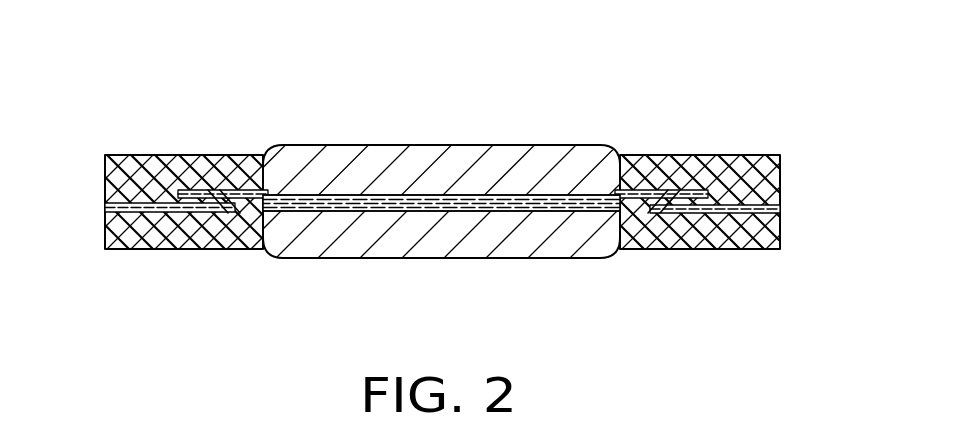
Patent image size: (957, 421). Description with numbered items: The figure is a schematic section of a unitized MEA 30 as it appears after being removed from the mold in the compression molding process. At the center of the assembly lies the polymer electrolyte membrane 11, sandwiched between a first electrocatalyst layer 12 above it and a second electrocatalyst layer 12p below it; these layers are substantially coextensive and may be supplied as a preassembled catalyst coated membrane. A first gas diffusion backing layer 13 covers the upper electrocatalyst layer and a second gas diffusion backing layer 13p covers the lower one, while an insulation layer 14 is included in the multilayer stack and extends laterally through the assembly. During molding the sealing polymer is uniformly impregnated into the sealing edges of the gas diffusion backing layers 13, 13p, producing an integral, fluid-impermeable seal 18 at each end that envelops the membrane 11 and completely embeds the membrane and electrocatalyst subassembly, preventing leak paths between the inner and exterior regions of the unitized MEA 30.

The unitized MEA 30 is at (303, 54).
The seal 18 is at (105, 181).
The first gas diffusion backing layer 13 is at (358, 145).
The second gas diffusion backing layer 13p is at (357, 258).
The insulation layer 14 is at (780, 207).
The first electrocatalyst layer 12 is at (445, 195).
The polymer electrolyte membrane 11 is at (522, 201).
The second electrocatalyst layer 12p is at (445, 211).